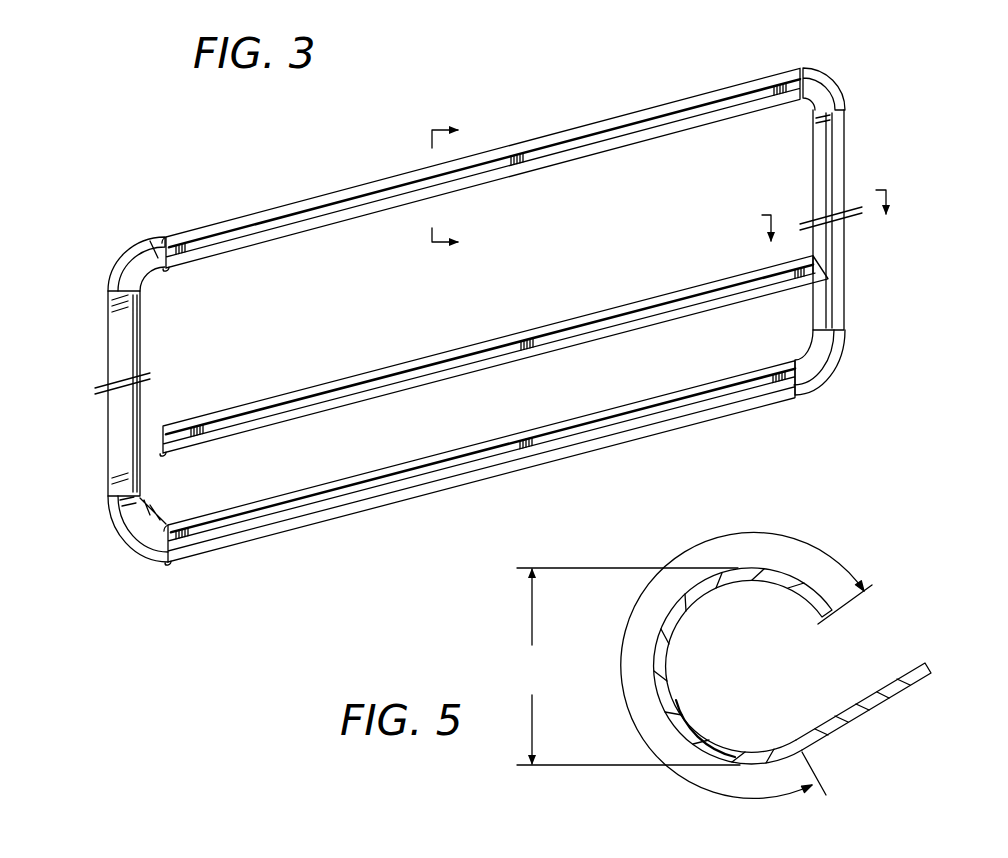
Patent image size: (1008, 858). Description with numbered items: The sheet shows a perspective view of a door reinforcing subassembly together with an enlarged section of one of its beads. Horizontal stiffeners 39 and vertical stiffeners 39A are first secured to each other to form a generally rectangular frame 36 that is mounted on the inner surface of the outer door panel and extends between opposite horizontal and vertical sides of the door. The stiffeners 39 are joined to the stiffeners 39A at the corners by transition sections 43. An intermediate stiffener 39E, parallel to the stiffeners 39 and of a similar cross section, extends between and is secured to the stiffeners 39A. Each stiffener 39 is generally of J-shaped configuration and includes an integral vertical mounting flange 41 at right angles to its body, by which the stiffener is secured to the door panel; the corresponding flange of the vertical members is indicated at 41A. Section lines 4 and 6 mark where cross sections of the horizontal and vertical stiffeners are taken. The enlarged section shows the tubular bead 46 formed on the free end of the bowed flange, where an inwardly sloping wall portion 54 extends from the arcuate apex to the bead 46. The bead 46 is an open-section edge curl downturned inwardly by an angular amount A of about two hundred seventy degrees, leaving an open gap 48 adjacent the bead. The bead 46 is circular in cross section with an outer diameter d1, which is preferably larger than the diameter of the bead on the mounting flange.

In FIG. 3, the rectangular frame 36 is at (672, 92).
In FIG. 3, the stiffener 39 is at (584, 128).
In FIG. 3, the stiffener 39A is at (110, 482).
In FIG. 3, the intermediate stiffener 39E is at (488, 342).
In FIG. 3, the mounting flange 41 is at (217, 232).
In FIG. 3, the vertical strip insert 41A is at (107, 318).
In FIG. 3, the transition section 43 is at (137, 250).
In FIG. 3, the section line 4- 4 is at (453, 181).
In FIG. 3, the section line 6- 6 is at (824, 230).
In FIG. 5, the tubular bead 46 is at (656, 680).
In FIG. 5, the open gap 48 is at (847, 658).
In FIG. 5, the inwardly sloping wall portion 54 is at (897, 699).
In FIG. 5, the angular amount A is at (746, 665).
In FIG. 5, the outer diameter d1 is at (625, 666).